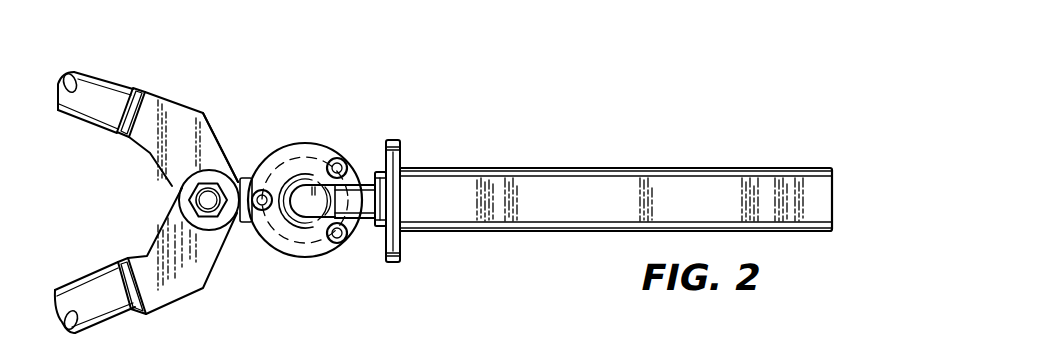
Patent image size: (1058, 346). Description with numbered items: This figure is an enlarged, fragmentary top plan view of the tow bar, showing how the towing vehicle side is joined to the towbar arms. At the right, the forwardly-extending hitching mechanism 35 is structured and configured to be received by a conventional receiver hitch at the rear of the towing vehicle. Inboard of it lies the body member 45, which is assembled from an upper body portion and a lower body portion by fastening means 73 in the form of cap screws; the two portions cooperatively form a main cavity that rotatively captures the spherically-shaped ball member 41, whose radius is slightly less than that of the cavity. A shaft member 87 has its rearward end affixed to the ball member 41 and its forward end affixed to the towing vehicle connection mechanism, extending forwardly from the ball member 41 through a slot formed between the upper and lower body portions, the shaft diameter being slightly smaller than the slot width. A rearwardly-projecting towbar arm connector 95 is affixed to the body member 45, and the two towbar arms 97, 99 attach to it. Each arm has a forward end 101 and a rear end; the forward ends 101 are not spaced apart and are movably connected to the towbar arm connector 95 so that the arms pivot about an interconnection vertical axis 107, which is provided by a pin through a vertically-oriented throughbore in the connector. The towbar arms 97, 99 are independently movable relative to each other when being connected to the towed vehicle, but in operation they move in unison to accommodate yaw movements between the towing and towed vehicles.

The hitching mechanism 35 is at (452, 187).
The ball member 41 is at (308, 205).
The body member 45 is at (286, 238).
The fastening means 73 is at (336, 160).
The shaft member 87 is at (372, 218).
The towbar arm connector 95 is at (238, 185).
The towbar arm 97 is at (80, 295).
The towbar arm 99 is at (93, 98).
The forward end 101 is at (122, 262).
The interconnection vertical axis 107 is at (210, 196).